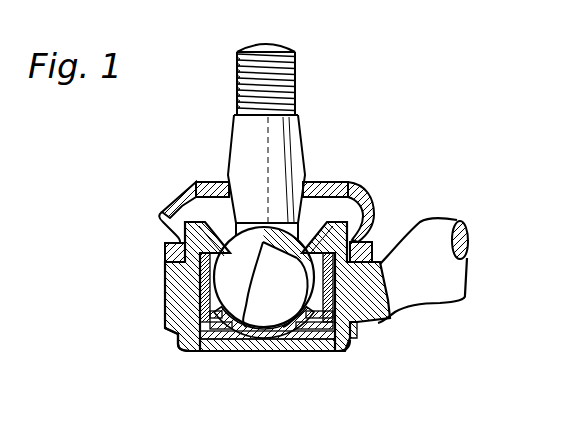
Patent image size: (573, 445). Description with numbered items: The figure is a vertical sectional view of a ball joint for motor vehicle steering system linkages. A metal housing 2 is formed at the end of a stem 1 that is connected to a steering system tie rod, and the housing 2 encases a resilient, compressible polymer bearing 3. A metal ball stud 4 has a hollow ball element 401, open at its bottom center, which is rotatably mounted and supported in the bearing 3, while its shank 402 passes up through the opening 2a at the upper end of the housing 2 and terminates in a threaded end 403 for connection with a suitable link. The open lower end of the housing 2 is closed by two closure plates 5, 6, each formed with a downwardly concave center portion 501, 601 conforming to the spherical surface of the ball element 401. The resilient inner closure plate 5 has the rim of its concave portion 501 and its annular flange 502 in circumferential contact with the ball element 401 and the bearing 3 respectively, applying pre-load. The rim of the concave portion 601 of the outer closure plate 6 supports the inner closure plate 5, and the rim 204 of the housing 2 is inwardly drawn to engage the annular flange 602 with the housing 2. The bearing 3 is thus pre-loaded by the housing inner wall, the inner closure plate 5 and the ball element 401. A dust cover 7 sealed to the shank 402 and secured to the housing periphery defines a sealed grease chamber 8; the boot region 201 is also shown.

The stem 1 is at (444, 218).
The housing 2 is at (179, 303).
The opening 2a is at (219, 181).
The bearing 3 is at (212, 352).
The ball stud 4 is at (288, 134).
The inner closure plate 5 is at (348, 335).
The outer closure plate 6 is at (343, 350).
The dust cover 7 is at (331, 181).
The sealed grease chamber 8 is at (160, 212).
The boot wall 201 is at (344, 198).
The rim of the housing 204 is at (188, 350).
The ball element 401 is at (195, 199).
The shank 402 is at (235, 117).
The threaded end 403 is at (296, 52).
The concave portion 501 is at (262, 352).
The annular flange 502 is at (218, 352).
The concave portion 601 is at (283, 352).
The annular flange 602 is at (313, 352).